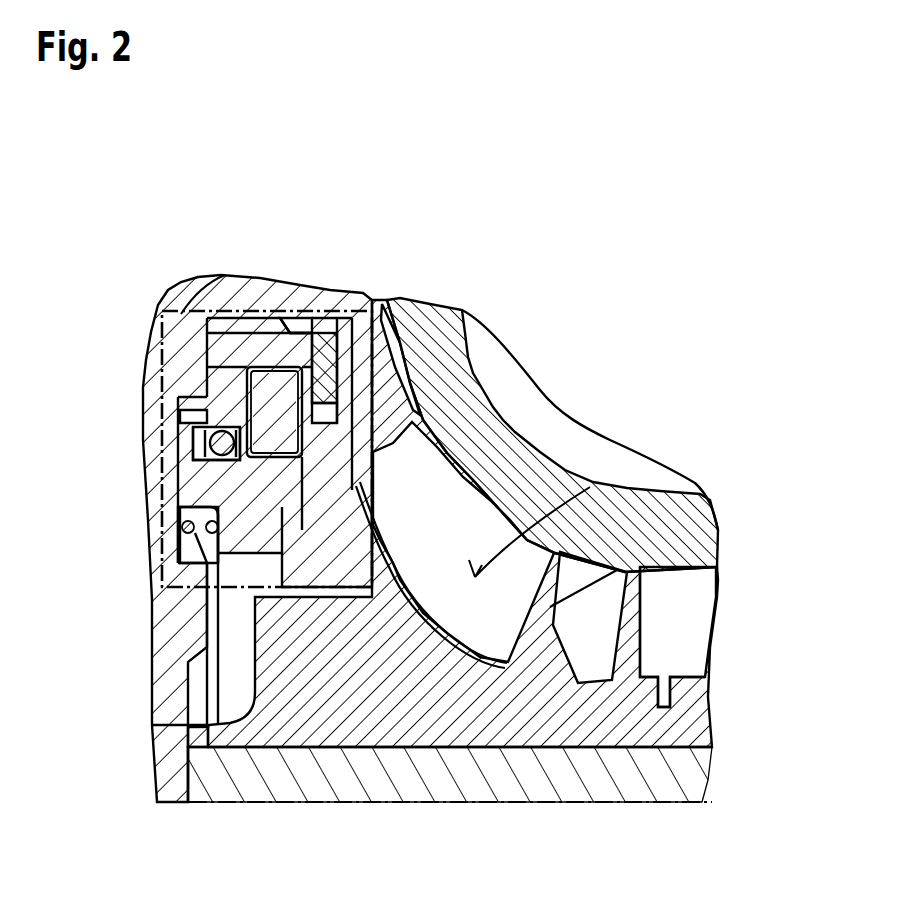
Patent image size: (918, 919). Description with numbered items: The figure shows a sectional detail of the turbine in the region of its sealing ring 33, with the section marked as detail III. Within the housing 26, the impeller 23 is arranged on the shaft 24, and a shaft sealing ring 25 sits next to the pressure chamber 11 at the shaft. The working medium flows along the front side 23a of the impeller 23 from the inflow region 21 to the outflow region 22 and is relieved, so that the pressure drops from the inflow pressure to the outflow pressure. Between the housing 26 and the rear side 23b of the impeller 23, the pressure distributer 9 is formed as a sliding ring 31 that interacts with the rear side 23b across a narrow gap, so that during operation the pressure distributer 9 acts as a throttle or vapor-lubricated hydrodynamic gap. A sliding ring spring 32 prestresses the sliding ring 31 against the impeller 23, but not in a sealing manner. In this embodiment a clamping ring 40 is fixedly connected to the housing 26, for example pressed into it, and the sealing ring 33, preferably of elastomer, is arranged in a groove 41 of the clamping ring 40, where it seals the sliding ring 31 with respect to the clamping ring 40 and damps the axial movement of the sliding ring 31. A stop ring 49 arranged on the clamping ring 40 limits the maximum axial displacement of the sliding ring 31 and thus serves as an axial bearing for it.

The pressure distributer 9 is at (300, 479).
The pressure chamber 11 is at (235, 676).
The inflow region 21 is at (312, 300).
The outflow region 22 is at (697, 603).
The impeller 23 is at (497, 732).
The front side 23a is at (595, 478).
The rear side 23b is at (305, 492).
The shaft 24 is at (350, 772).
The shaft sealing ring 25 is at (195, 752).
The housing 26 is at (207, 292).
The sliding ring 31 is at (283, 413).
The sliding ring spring 32 is at (213, 528).
The sealing ring 33 is at (232, 460).
The clamping ring 40 is at (251, 330).
The groove 41 is at (245, 440).
The stop ring 49 is at (323, 337).
The detail section III is at (173, 297).